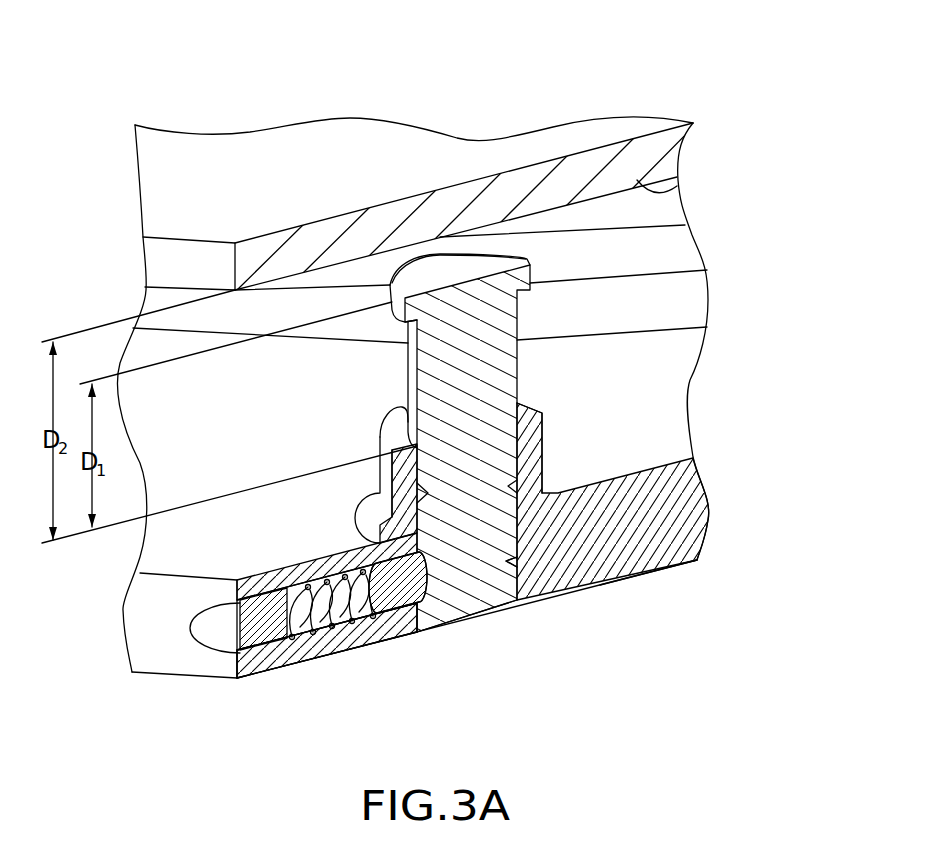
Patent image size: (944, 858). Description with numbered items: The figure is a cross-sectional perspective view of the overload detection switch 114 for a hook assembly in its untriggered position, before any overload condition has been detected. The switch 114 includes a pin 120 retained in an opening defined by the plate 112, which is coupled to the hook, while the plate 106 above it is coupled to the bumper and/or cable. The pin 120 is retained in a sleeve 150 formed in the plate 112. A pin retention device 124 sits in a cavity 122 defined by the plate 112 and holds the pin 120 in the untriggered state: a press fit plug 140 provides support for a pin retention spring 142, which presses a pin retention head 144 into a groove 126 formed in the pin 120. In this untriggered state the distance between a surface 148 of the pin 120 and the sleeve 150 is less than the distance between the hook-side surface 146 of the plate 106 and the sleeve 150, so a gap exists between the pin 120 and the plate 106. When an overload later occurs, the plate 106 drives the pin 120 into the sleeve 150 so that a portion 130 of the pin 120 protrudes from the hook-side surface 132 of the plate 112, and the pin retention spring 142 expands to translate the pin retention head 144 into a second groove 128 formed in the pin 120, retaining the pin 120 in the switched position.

The switch 114 is at (141, 78).
The plate 106 is at (388, 158).
The hook-side surface 146 is at (678, 192).
The surface 148 is at (490, 264).
The pin 120 is at (497, 372).
The groove 128 is at (530, 482).
The sleeve 150 is at (390, 432).
The plate 112 is at (650, 522).
The hook-side surface 132 is at (620, 582).
The groove 126 is at (513, 557).
The portion 130 is at (488, 598).
The pin retention head 144 is at (404, 592).
The pin retention spring 142 is at (348, 603).
The cavity 122 is at (327, 630).
The pin retention device 124 is at (271, 658).
The press fit plug 140 is at (253, 626).